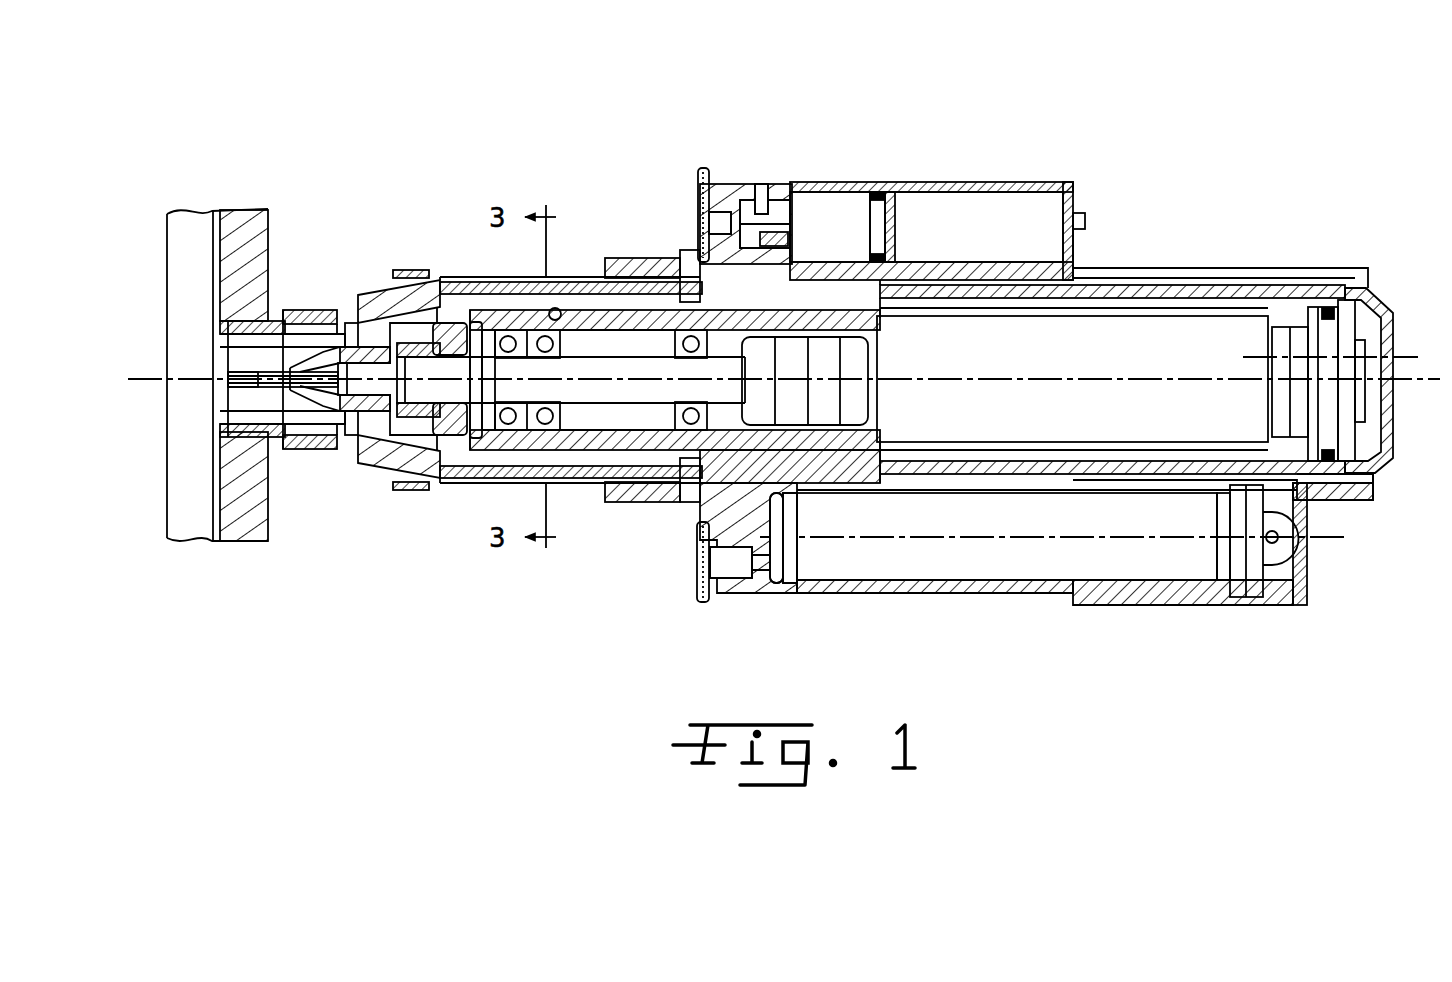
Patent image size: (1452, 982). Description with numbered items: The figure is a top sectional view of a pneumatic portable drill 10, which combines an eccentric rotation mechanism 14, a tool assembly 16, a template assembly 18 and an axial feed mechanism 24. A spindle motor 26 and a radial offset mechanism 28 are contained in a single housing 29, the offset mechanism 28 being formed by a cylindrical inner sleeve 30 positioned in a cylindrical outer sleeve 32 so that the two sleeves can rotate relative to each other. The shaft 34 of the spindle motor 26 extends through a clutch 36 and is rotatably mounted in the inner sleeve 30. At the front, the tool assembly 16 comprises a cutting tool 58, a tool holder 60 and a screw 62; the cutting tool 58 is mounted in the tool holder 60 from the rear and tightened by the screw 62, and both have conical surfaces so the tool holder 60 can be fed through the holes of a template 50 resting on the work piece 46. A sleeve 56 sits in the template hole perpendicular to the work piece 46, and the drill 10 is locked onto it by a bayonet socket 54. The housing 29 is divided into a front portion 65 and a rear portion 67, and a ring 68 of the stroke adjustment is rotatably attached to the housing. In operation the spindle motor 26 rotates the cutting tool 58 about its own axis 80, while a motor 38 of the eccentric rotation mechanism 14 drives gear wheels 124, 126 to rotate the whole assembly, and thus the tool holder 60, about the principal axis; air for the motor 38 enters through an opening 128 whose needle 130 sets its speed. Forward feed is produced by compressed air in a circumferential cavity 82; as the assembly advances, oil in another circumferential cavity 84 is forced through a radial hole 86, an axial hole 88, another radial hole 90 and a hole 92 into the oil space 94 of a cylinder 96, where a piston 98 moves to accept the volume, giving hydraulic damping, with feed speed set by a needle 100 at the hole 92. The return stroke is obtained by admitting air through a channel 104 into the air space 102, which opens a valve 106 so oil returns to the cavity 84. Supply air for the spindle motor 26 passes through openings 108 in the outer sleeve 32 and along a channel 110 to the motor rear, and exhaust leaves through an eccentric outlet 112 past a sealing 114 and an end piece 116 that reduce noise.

The pneumatic portable drill 10 is at (289, 140).
The eccentric rotation mechanism 14 is at (1333, 594).
The tool assembly 16 is at (368, 546).
The template assembly 18 is at (233, 568).
The axial feed mechanism 24 is at (888, 148).
The spindle motor 26 is at (1152, 372).
The radial offset mechanism 28 is at (576, 167).
The housing 29 is at (469, 148).
The inner sleeve 30 is at (503, 333).
The outer sleeve 32 is at (576, 310).
The shaft 34 is at (643, 394).
The clutch 36 is at (760, 412).
The motor 38 is at (1032, 534).
The work piece 46 is at (206, 291).
The template 50 is at (265, 251).
The bayonet socket 54 is at (298, 450).
The sleeve 56 is at (230, 425).
The cutting tool 58 is at (237, 385).
The tool holder 60 is at (328, 356).
The screw 62 is at (355, 463).
The front portion 65 is at (478, 489).
The rear portion 67 is at (1045, 598).
The ring 68 is at (1353, 438).
The axis 80 is at (178, 376).
The circumferential cavity 82 is at (872, 312).
The circumferential cavity 84 is at (713, 290).
The radial hole 86 is at (690, 262).
The axial hole 88 is at (700, 290).
The radial hole 90 is at (712, 205).
The hole 92 is at (770, 222).
The space 94 is at (847, 230).
The cylinder 96 is at (1003, 187).
The piston 98 is at (890, 208).
The needle 100 is at (757, 213).
The space 102 is at (1051, 225).
The channel 104 is at (1075, 221).
The valve 106 is at (885, 240).
The openings 108 is at (975, 460).
The channel 110 is at (1118, 310).
The outlet 112 is at (1288, 345).
The sealing 114 is at (1327, 400).
The end piece 116 is at (1393, 318).
The gear wheel 124 is at (1245, 575).
The gear wheel 126 is at (1323, 499).
The opening 128 is at (790, 560).
The needle 130 is at (757, 593).